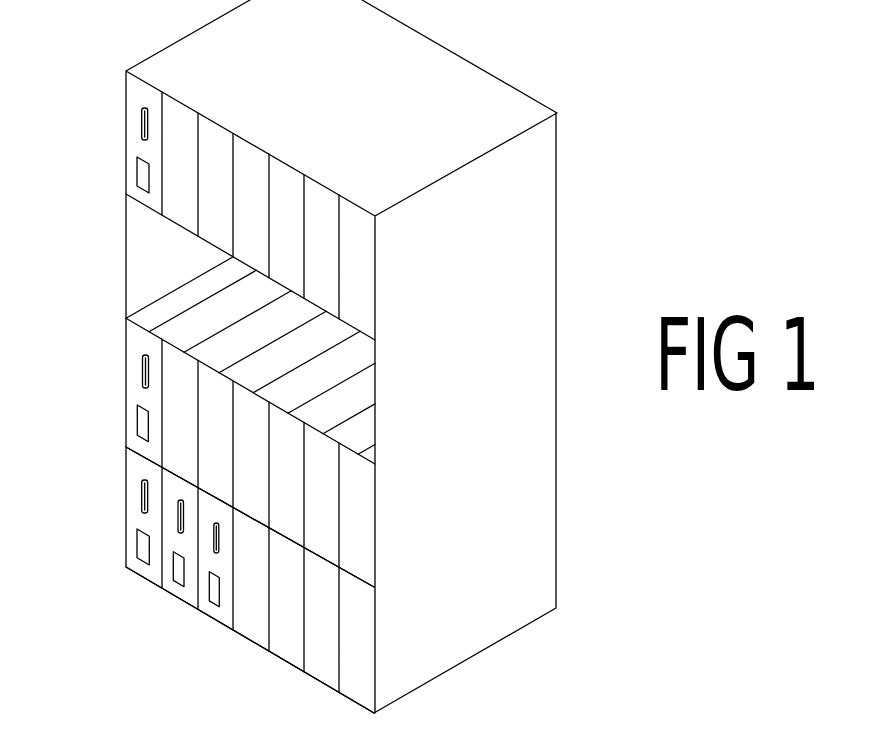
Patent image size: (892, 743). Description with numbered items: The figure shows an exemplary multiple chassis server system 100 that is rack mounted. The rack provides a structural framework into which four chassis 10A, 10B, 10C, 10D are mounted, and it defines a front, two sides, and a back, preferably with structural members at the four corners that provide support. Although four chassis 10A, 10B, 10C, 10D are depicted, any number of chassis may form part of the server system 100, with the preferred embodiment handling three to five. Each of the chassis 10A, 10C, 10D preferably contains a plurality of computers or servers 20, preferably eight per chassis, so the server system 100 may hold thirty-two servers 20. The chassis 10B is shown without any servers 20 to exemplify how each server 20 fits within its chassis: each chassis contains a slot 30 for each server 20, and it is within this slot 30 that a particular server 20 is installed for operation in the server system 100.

The multiple chassis server system 100 is at (577, 182).
The chassis 10A is at (118, 150).
The chassis 10B is at (117, 243).
The chassis 10C is at (118, 380).
The chassis 10D is at (118, 514).
The servers 20 is at (211, 622).
The slot 30 is at (212, 288).